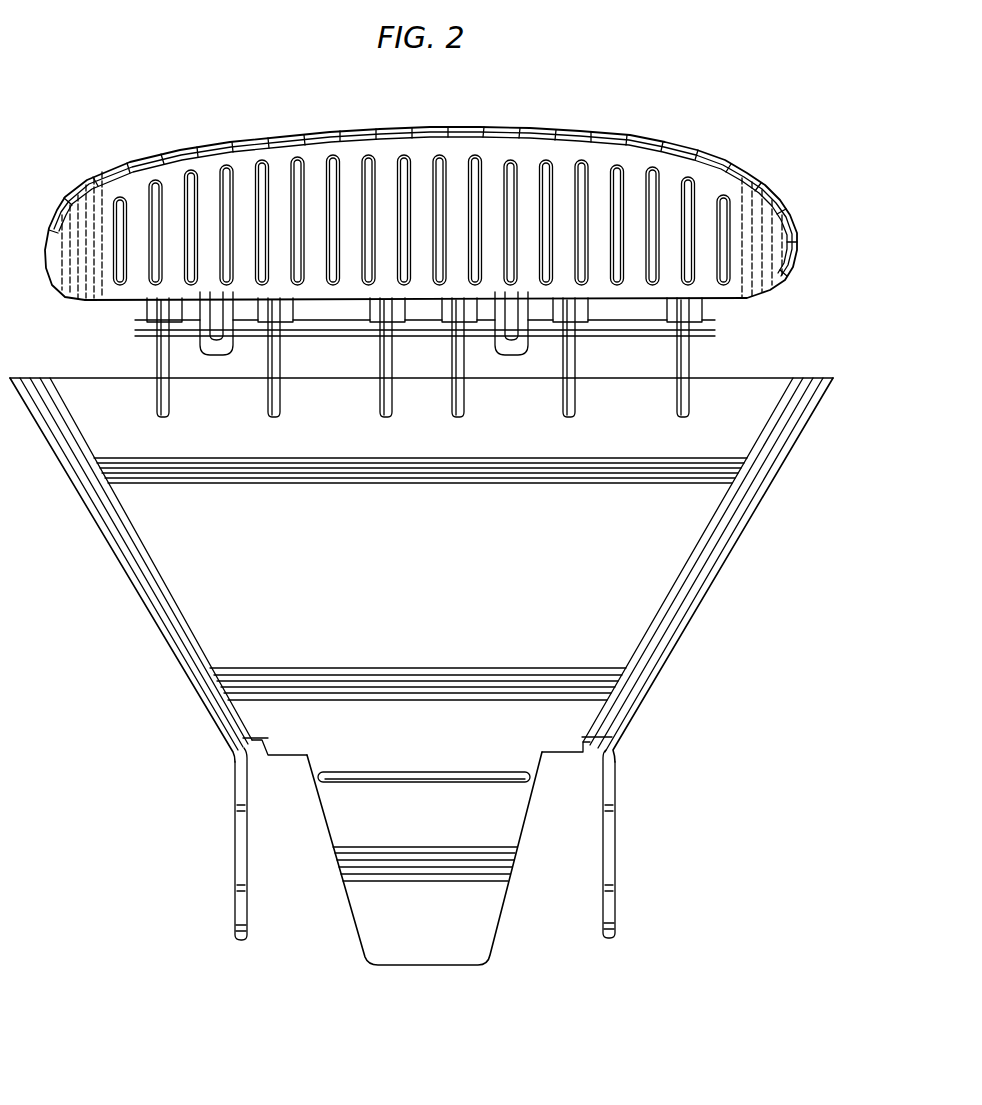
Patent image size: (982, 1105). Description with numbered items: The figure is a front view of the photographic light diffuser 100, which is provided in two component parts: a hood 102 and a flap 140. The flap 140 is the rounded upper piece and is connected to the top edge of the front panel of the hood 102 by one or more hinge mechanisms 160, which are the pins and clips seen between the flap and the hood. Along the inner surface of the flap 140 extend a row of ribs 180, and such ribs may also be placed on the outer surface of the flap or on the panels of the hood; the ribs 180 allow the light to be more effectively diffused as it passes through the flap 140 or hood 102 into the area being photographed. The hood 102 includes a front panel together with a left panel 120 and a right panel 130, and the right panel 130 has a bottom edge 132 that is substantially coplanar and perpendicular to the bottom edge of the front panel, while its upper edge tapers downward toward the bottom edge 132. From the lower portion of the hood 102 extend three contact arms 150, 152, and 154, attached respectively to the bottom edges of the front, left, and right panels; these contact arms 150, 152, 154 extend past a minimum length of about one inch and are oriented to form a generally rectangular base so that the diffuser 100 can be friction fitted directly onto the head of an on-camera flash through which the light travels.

The diffuser 100 is at (750, 118).
The hood 102 is at (749, 557).
The left panel 120 is at (690, 655).
The right panel 130 is at (140, 602).
The bottom edge 132 is at (240, 768).
The flap 140 is at (345, 128).
The contact arm 150 is at (448, 967).
The contact arm 152 is at (618, 855).
The contact arm 154 is at (235, 852).
The hinge mechanism 160 is at (683, 358).
The ribs 180 is at (482, 160).